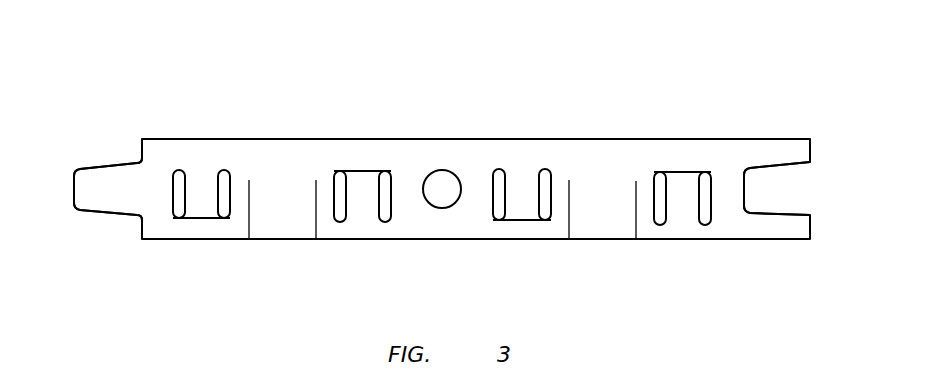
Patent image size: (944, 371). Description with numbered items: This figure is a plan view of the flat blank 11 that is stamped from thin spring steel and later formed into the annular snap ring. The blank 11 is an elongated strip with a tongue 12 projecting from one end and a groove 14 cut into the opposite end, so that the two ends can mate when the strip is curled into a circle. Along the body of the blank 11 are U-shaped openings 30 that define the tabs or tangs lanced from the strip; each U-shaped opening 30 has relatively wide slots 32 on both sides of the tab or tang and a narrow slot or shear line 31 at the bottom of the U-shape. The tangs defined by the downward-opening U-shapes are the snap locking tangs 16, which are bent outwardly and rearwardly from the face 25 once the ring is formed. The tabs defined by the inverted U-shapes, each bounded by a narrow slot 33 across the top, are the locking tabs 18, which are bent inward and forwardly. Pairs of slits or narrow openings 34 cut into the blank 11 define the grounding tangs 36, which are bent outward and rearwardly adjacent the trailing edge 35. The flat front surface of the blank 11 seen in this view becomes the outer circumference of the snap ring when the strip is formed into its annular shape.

The blank 11 is at (547, 112).
The tongue 12 is at (93, 165).
The groove 14 is at (747, 190).
The snap locking tang 16 is at (203, 200).
The locking tab 18 is at (362, 187).
The face 25 is at (421, 167).
The U-shaped opening 30 is at (177, 172).
The narrow slot or shear line 31 is at (203, 220).
The wide slot 32 is at (498, 172).
The narrow slot 33 is at (353, 172).
The slit 34 is at (248, 225).
The trailing edge 35 is at (282, 242).
The grounding tang 36 is at (293, 206).